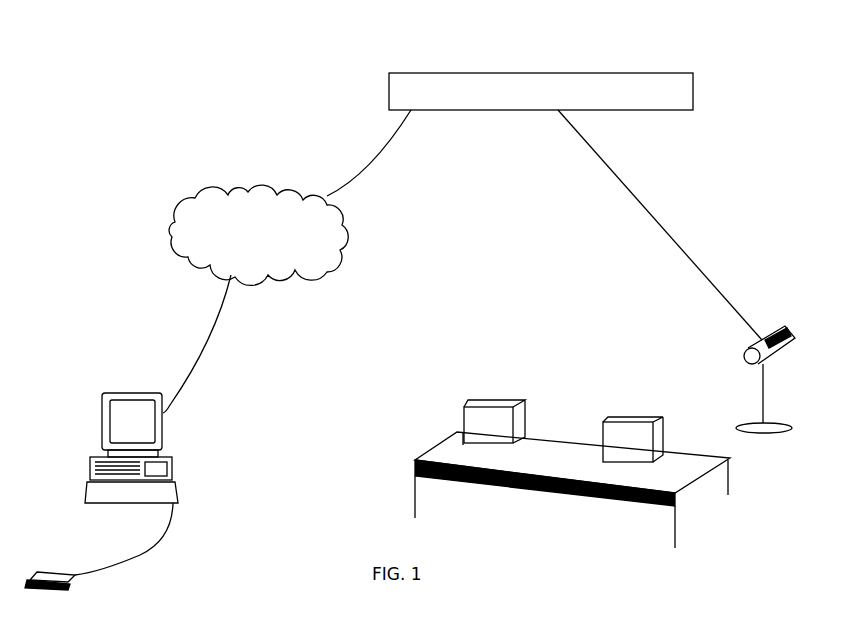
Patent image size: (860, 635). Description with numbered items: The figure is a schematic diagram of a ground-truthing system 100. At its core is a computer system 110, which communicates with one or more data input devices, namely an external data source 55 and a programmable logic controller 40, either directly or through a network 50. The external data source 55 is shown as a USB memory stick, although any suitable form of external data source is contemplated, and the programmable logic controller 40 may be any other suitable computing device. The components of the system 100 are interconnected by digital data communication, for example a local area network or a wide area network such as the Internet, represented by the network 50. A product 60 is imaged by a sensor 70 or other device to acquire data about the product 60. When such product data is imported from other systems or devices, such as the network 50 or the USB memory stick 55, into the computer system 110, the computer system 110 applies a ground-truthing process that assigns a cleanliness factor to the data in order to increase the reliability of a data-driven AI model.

The system 100 is at (92, 82).
The programmable logic controller 40 is at (617, 73).
The network 50 is at (300, 190).
The product 60 is at (437, 448).
The sensor 70 is at (786, 330).
The computer system 110 is at (98, 410).
The external data source 55 is at (45, 572).